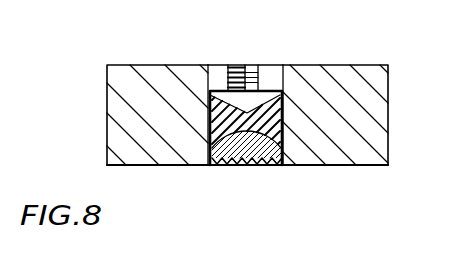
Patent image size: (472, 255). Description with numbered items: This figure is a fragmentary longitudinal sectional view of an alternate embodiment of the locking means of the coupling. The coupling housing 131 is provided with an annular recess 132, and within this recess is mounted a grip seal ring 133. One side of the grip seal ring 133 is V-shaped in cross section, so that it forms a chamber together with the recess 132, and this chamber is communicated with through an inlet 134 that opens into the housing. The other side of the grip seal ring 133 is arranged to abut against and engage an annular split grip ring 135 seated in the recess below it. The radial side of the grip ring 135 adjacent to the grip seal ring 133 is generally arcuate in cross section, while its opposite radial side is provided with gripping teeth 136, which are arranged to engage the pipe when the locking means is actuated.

The coupling housing 131 is at (271, 62).
The annular recess 132 is at (218, 88).
The grip seal ring 133 is at (284, 107).
The inlet 134 is at (242, 65).
The annular split grip ring 135 is at (222, 165).
The gripping teeth 136 is at (252, 165).